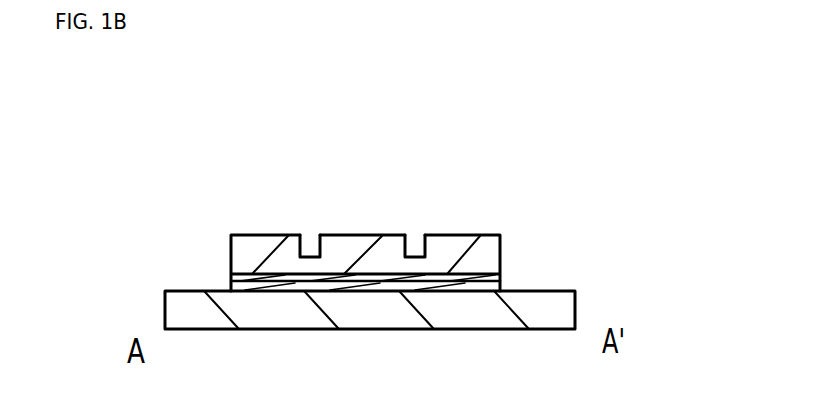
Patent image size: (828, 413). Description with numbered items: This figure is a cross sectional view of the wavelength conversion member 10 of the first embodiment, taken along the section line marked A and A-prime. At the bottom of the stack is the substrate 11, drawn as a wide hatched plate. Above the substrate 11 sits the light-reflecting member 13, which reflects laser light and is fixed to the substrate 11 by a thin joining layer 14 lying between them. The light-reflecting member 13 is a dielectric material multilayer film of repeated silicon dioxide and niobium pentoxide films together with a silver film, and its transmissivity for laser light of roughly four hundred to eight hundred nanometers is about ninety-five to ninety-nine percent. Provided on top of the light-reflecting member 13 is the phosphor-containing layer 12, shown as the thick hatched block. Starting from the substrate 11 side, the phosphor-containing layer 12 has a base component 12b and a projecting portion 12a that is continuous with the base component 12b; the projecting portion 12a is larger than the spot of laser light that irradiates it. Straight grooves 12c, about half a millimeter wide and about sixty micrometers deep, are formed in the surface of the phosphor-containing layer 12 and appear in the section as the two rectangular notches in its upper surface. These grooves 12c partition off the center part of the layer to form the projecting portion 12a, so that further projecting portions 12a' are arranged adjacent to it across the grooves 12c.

The wavelength conversion member 10 is at (580, 231).
The substrate 11 is at (198, 302).
The phosphor-containing layer 12 is at (532, 140).
The projecting portion 12a is at (314, 211).
The base component 12b is at (443, 268).
The projecting portions 12a' is at (487, 211).
The grooves 12c is at (310, 238).
The light-reflecting member 13 is at (500, 281).
The joining layer 14 is at (483, 293).